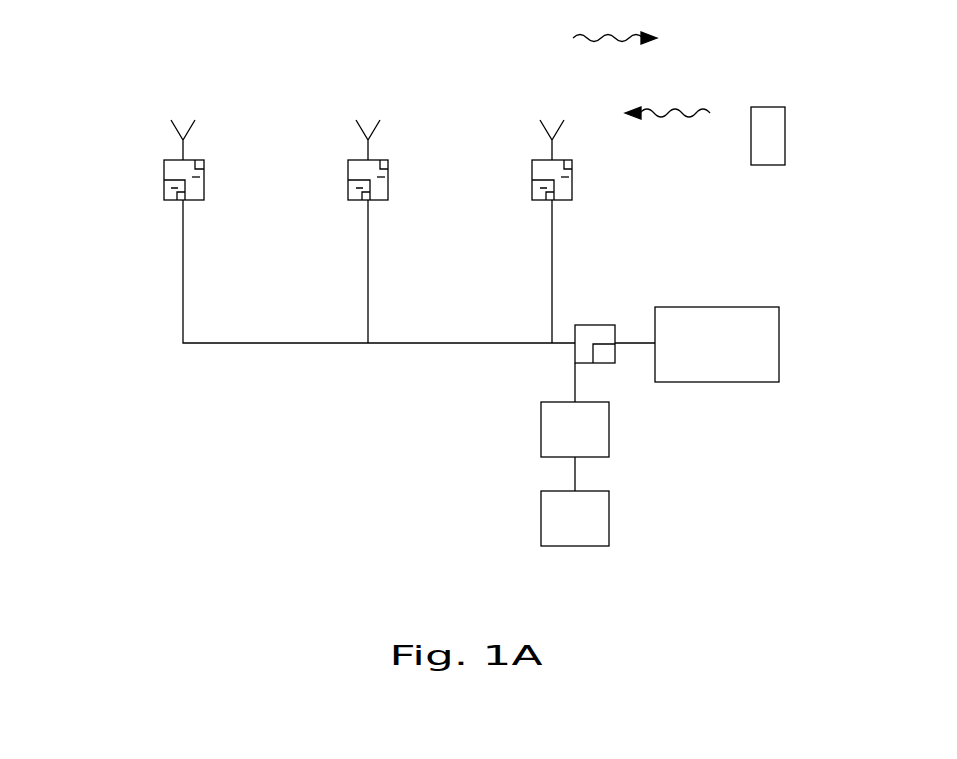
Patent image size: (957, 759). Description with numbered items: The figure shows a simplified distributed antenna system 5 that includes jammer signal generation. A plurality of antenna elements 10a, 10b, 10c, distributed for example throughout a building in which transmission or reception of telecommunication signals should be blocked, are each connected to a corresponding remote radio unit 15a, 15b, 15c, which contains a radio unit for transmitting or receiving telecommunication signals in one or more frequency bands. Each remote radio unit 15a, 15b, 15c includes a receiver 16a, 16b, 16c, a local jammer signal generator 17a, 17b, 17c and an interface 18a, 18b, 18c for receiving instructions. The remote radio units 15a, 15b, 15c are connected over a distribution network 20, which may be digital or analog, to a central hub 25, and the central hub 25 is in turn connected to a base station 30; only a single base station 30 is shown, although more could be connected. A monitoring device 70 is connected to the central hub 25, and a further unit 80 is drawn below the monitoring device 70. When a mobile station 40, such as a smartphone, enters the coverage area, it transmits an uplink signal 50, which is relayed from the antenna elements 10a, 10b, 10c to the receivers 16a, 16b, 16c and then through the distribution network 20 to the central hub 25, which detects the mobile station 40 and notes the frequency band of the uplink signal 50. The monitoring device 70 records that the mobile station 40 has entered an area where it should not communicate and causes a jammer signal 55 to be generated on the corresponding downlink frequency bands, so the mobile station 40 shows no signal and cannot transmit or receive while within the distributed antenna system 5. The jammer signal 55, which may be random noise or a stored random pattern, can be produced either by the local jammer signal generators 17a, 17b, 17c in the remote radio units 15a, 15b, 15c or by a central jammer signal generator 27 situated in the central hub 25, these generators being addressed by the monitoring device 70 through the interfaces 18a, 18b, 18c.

The distributed antenna system 5 is at (128, 141).
The antenna element 10a is at (193, 142).
The antenna element 10b is at (386, 142).
The antenna element 10c is at (569, 142).
The remote radio unit 15a is at (200, 177).
The remote radio unit 15b is at (386, 177).
The remote radio unit 15c is at (569, 177).
The receiver 16a is at (202, 166).
The receiver 16b is at (387, 166).
The receiver 16c is at (571, 165).
The local jammer signal generator 17a is at (173, 189).
The local jammer signal generator 17b is at (357, 189).
The local jammer signal generator 17c is at (542, 189).
The interface 18a is at (180, 201).
The interface 18b is at (365, 201).
The interface 18c is at (549, 201).
The distribution network 20 is at (463, 344).
The central hub 25 is at (600, 334).
The central jammer signal generator 27 is at (604, 364).
The base station 30 is at (717, 364).
The mobile station 40 is at (769, 135).
The uplink signal 50 is at (686, 115).
The jammer signal 55 is at (633, 40).
The monitoring device 70 is at (575, 446).
The storage unit 80 is at (575, 518).